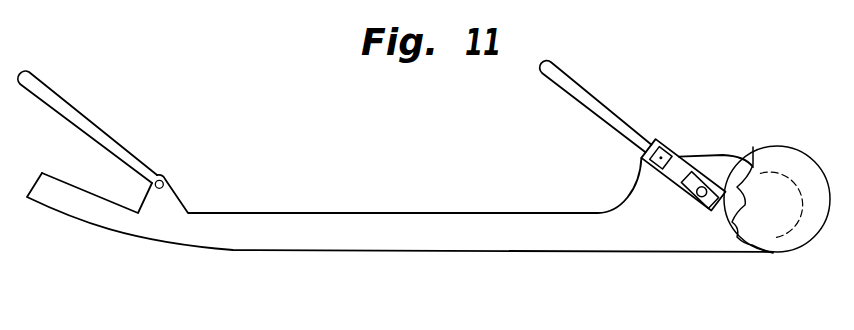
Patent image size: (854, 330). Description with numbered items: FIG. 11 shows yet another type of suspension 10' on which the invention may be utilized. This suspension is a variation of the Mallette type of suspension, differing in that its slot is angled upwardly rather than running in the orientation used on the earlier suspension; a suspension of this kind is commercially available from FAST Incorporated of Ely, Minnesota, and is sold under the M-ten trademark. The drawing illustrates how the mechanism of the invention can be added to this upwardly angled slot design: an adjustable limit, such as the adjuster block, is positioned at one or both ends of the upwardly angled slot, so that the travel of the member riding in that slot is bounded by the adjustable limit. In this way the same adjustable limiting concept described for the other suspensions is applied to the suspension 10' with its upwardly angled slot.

The base member 10' is at (428, 226).